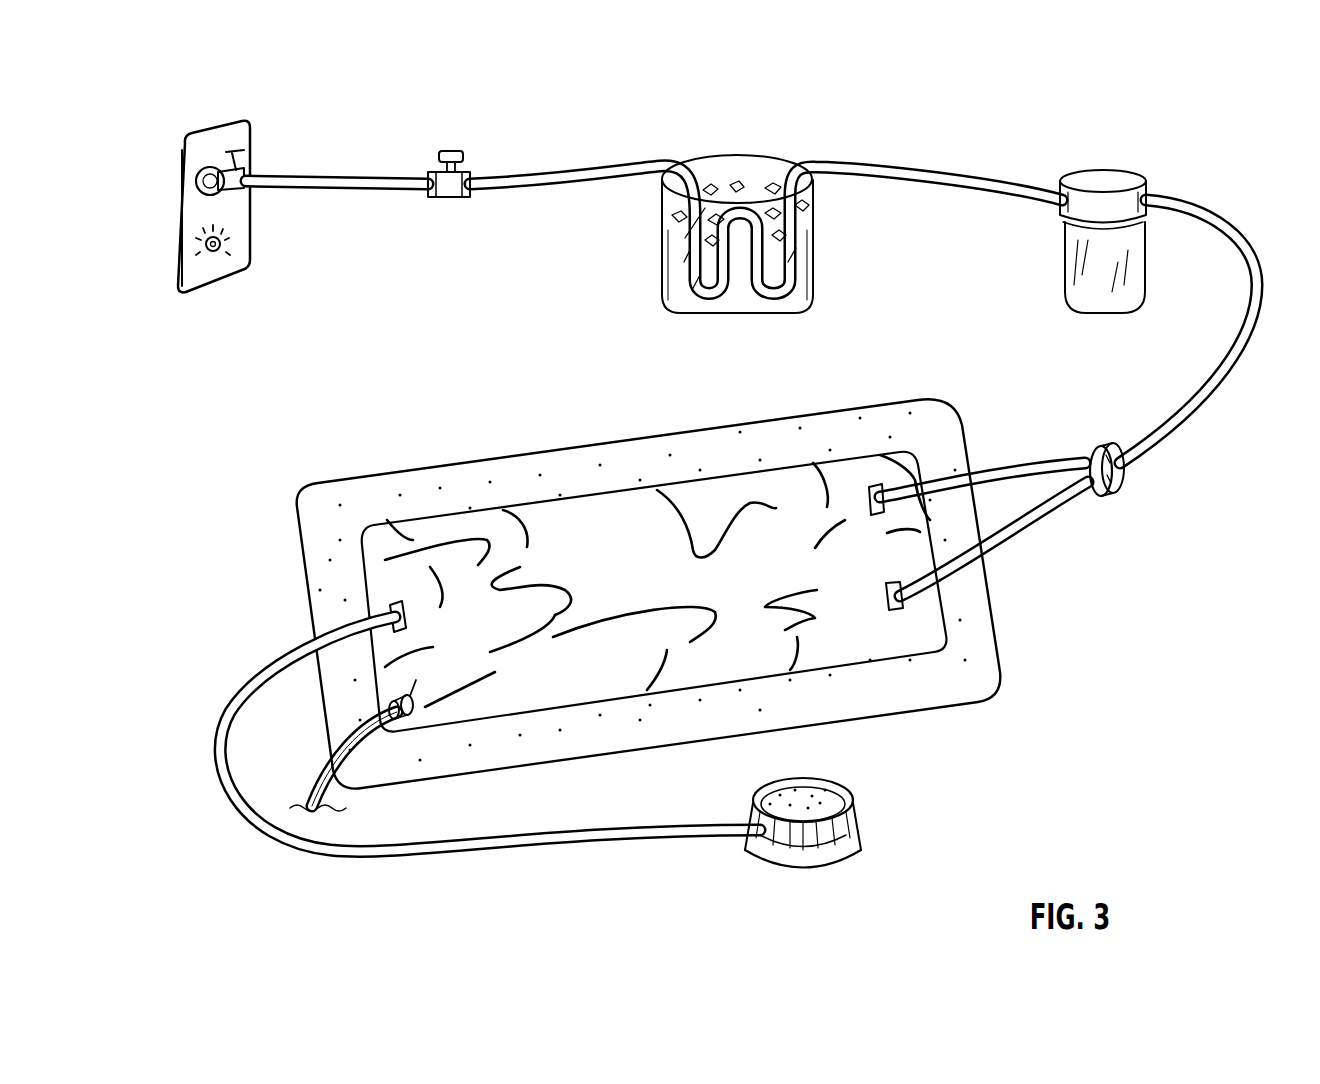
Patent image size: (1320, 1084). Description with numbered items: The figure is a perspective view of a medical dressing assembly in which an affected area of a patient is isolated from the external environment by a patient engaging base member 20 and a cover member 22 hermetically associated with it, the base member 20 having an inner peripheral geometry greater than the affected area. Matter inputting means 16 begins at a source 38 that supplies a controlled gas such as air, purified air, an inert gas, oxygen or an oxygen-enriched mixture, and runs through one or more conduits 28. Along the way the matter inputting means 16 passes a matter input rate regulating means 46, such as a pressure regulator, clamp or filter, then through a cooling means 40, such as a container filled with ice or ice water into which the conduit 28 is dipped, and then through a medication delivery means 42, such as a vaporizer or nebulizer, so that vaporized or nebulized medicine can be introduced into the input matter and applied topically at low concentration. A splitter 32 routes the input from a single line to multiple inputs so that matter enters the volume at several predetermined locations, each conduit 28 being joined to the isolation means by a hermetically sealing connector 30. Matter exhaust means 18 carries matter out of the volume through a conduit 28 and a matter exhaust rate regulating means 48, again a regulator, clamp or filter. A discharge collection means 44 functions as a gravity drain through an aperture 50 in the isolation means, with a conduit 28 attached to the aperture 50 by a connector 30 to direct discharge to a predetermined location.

The means for controllably inputting matter 16 is at (781, 273).
The means for controllably exhausting matter 18 is at (490, 774).
The patient engaging base member 20 is at (649, 575).
The cover member 22 is at (657, 534).
The conduit 28 is at (767, 493).
The connector 30 is at (630, 588).
The splitter 32 is at (1107, 432).
The source for supplying a controlled gas 38 is at (211, 182).
The means for cooling matter inputting means 40 is at (737, 192).
The medication delivery means 42 is at (1103, 203).
The means for collecting discharge matter 44 is at (314, 759).
The matter input rate regulating means 46 is at (450, 141).
The matter exhaust rate regulating means 48 is at (803, 868).
The aperture 50 is at (446, 753).